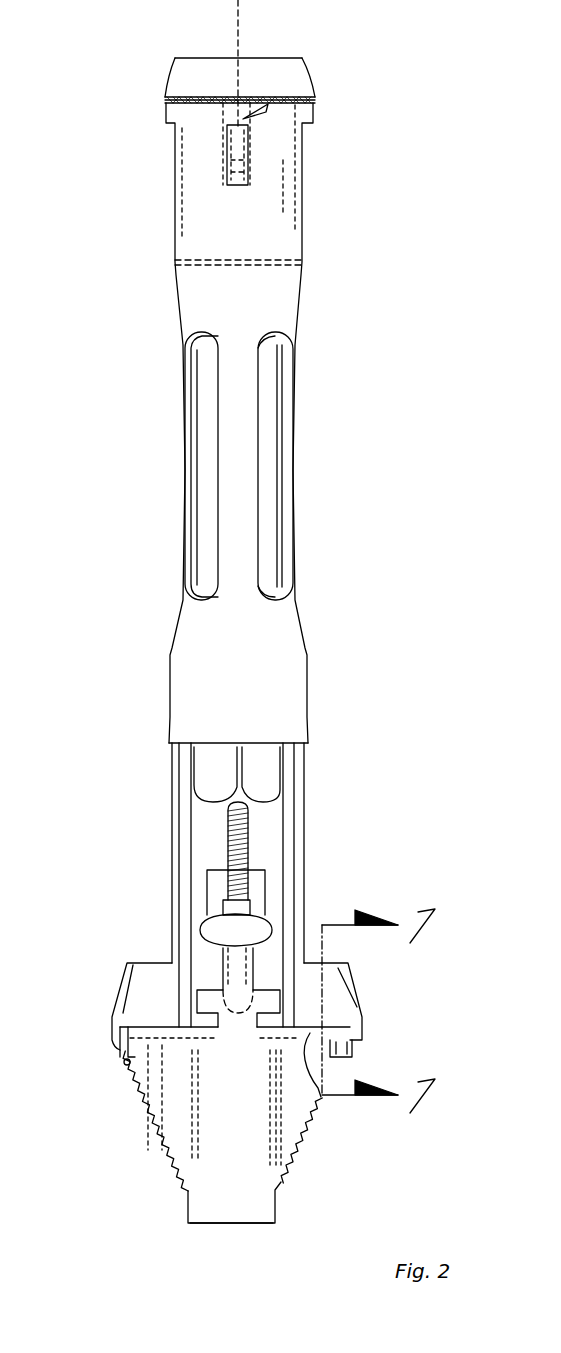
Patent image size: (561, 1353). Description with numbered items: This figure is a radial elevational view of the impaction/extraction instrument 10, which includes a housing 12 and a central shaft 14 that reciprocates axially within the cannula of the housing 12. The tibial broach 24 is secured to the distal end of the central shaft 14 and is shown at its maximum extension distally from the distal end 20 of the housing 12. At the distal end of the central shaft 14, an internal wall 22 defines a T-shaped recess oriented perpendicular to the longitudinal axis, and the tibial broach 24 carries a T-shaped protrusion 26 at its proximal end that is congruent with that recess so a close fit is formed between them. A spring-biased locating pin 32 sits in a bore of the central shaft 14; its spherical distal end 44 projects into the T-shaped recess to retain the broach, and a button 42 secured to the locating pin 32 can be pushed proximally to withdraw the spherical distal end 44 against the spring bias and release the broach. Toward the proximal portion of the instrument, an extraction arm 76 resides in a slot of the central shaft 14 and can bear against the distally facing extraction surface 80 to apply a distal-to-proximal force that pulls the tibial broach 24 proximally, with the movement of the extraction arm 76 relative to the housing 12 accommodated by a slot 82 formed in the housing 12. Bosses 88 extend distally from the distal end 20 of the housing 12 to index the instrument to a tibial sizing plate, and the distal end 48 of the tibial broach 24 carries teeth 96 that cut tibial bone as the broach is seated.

The impaction/extraction instrument 10 is at (383, 483).
The housing 12 is at (190, 692).
The central shaft 14 is at (272, 427).
The distal end of housing 20 is at (100, 1032).
The internal wall of central shaft 22 is at (270, 998).
The tibial broach 24 is at (170, 1107).
The T-shaped protrusion 26 is at (205, 998).
The locating pin 32 is at (235, 963).
The button 42 is at (252, 933).
The spherical distal end 44 is at (305, 1007).
The distal end of tibial broach 48 is at (293, 1232).
The extraction arm 76 is at (237, 153).
The extraction surface 80 is at (237, 125).
The slot in housing 82 is at (267, 107).
The bosses 88 is at (118, 1045).
The teeth 96 is at (167, 1157).